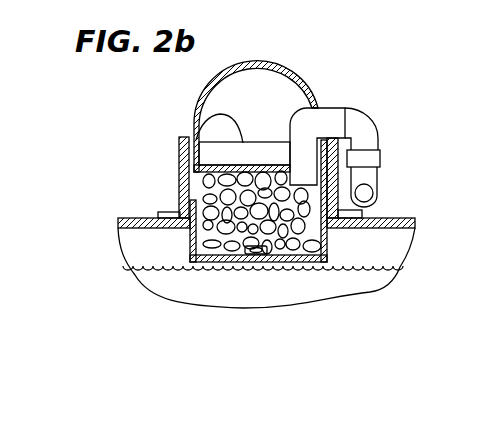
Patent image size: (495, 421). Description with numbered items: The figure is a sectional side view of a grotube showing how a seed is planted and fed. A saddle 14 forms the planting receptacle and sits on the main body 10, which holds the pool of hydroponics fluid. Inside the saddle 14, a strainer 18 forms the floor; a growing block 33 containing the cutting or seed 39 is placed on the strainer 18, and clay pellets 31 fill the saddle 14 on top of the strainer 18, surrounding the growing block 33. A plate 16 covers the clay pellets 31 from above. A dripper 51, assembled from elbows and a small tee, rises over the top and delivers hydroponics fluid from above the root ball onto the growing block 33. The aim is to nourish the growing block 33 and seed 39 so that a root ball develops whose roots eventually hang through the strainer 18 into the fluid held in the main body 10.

The main body 10 is at (392, 217).
The saddle 14 is at (182, 180).
The plate 16 is at (194, 122).
The strainer 18 is at (190, 241).
The clay pellets 31 is at (242, 143).
The growing block 33 is at (238, 262).
The seed 39 is at (264, 262).
The dripper 51 is at (369, 90).